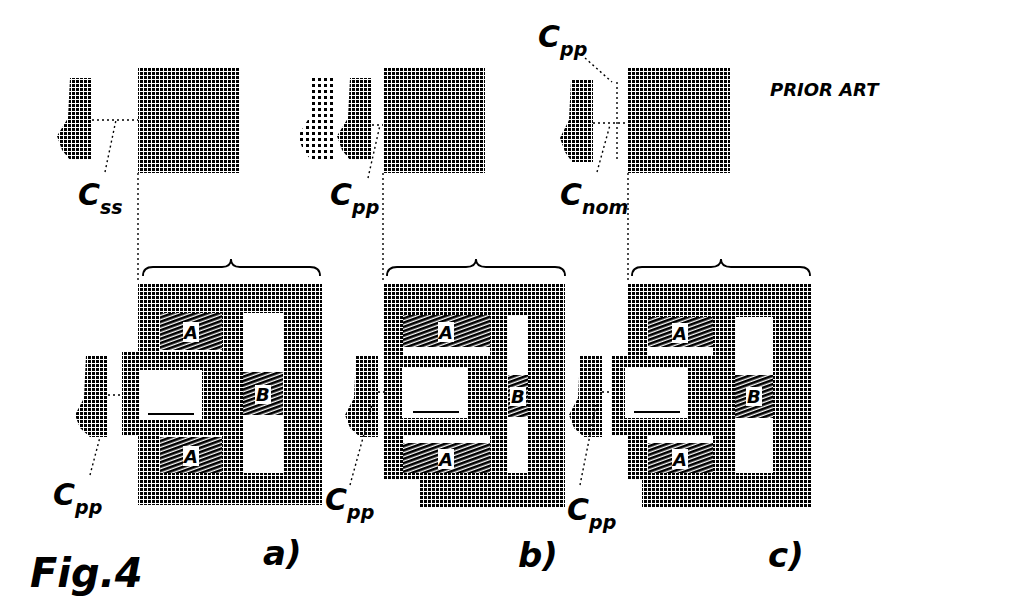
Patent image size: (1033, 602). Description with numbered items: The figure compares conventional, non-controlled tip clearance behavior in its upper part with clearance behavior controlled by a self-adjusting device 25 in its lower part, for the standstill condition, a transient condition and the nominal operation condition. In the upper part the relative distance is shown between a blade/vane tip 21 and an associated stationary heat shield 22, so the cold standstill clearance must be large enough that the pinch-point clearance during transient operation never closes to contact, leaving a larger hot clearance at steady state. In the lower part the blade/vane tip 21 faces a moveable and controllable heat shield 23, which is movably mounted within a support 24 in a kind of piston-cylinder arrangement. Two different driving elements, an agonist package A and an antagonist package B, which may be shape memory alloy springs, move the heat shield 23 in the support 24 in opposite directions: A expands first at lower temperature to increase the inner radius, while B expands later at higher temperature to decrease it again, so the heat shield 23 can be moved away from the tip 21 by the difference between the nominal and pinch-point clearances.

The blade/vane tip 21 is at (78, 80).
The stationary heat shield 22 is at (182, 70).
The moveable and controllable heat shield 23 is at (428, 393).
The support 24 is at (203, 495).
The self-adjusting device 25 is at (231, 265).